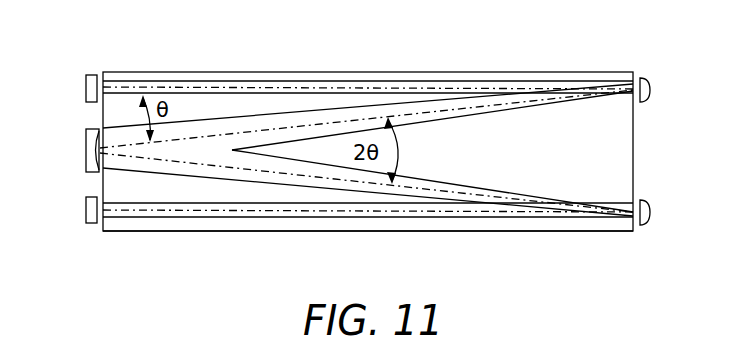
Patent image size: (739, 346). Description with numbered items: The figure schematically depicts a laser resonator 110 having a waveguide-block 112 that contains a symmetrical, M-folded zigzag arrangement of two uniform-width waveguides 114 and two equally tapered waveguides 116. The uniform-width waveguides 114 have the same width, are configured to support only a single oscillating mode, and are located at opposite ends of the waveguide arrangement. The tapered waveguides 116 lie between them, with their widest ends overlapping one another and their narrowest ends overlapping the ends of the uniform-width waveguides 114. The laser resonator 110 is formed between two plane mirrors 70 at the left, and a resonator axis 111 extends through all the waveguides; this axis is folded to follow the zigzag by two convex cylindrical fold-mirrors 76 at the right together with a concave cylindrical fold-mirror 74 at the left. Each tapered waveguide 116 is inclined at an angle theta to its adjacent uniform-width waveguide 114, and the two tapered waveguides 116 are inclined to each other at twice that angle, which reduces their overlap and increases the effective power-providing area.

The plane mirror 70 is at (86, 85).
The central mirror 74 is at (86, 148).
The convex cylindrical fold-mirror 76 is at (650, 86).
The laser resonator 110 is at (473, 272).
The resonator axis 111 is at (415, 88).
The waveguide-block 112 is at (218, 236).
The uniform-width waveguide 114 is at (245, 78).
The tapered waveguide 116 is at (434, 177).